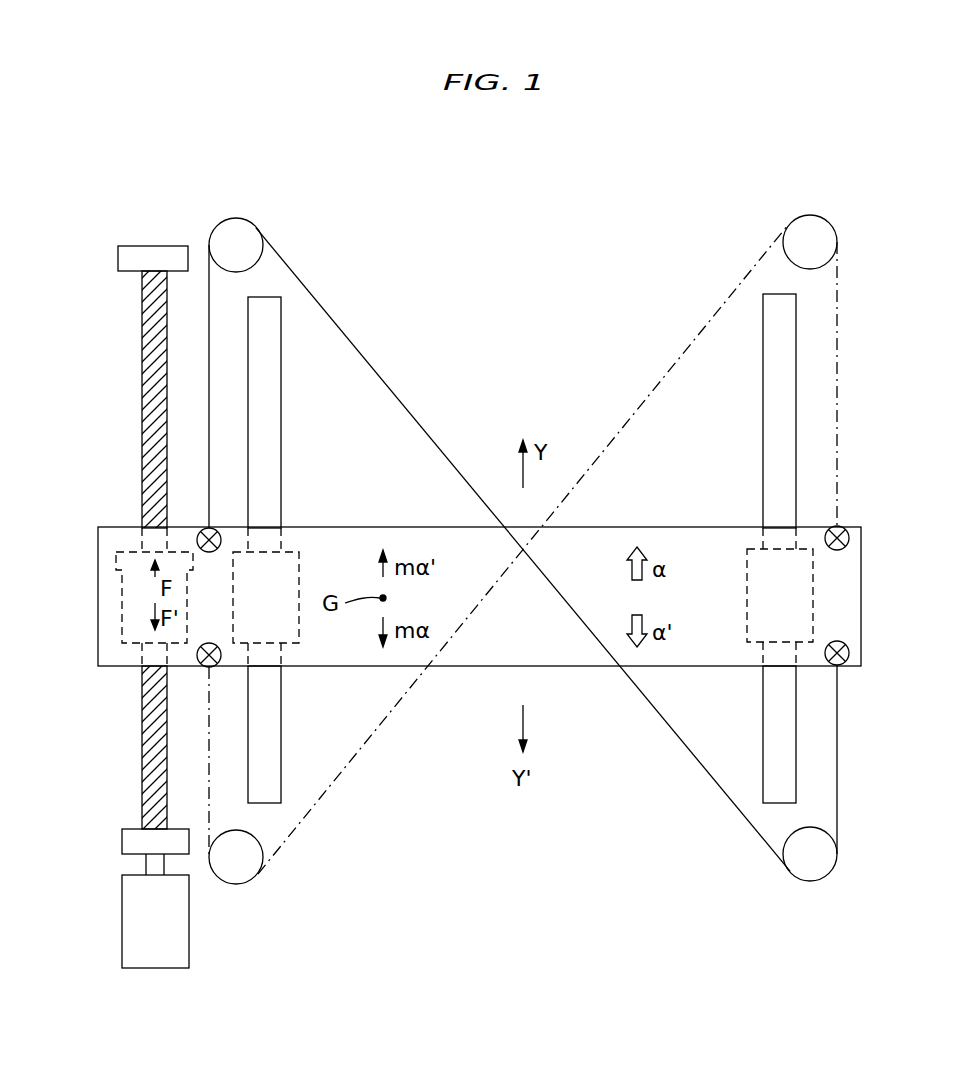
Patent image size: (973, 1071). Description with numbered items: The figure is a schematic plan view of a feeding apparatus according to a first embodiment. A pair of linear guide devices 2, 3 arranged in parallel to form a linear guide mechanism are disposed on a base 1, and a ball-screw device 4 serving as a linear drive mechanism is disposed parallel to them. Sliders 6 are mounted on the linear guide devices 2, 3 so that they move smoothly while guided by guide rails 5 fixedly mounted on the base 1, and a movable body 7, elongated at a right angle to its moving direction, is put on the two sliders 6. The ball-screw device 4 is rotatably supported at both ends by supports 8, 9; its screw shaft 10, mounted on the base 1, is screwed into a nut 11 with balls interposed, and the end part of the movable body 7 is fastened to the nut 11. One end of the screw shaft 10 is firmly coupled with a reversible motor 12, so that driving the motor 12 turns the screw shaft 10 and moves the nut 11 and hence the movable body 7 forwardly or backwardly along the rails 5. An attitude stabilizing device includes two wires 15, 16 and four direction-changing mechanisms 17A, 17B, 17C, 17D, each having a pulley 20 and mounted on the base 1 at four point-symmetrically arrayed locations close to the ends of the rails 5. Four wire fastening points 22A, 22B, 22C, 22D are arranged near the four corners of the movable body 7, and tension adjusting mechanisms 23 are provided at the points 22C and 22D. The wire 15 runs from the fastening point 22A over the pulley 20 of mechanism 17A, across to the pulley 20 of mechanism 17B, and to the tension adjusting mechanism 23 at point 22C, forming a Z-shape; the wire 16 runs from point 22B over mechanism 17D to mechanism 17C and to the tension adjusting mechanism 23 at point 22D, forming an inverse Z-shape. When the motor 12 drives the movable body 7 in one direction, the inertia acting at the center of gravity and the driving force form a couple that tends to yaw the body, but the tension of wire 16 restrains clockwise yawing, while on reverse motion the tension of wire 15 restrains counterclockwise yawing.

The base 1 is at (690, 247).
The linear guide device 2 is at (282, 443).
The linear guide device 3 is at (763, 441).
The ball-screw device 4 is at (141, 680).
The guide rail 5 is at (280, 372).
The slider 6 is at (283, 570).
The movable body 7 is at (537, 637).
The support 8 is at (130, 258).
The support 9 is at (132, 842).
The screw shaft 10 is at (150, 373).
The nut 11 is at (137, 603).
The reversible motor 12 is at (127, 928).
The rope member (wire) 15 is at (362, 353).
The rope member (wire) 16 is at (622, 423).
The direction-changing mechanism 17A is at (223, 237).
The direction-changing mechanism 17B is at (820, 862).
The direction-changing mechanism 17C is at (818, 233).
The direction-changing mechanism 17D is at (247, 863).
The pulley 20 is at (530, 548).
The wire fastening point 22A is at (203, 530).
The wire fastening point 22B is at (203, 666).
The wire fastening point 22C is at (843, 664).
The wire fastening point 22D is at (843, 528).
The tension adjusting mechanism 23 is at (896, 595).